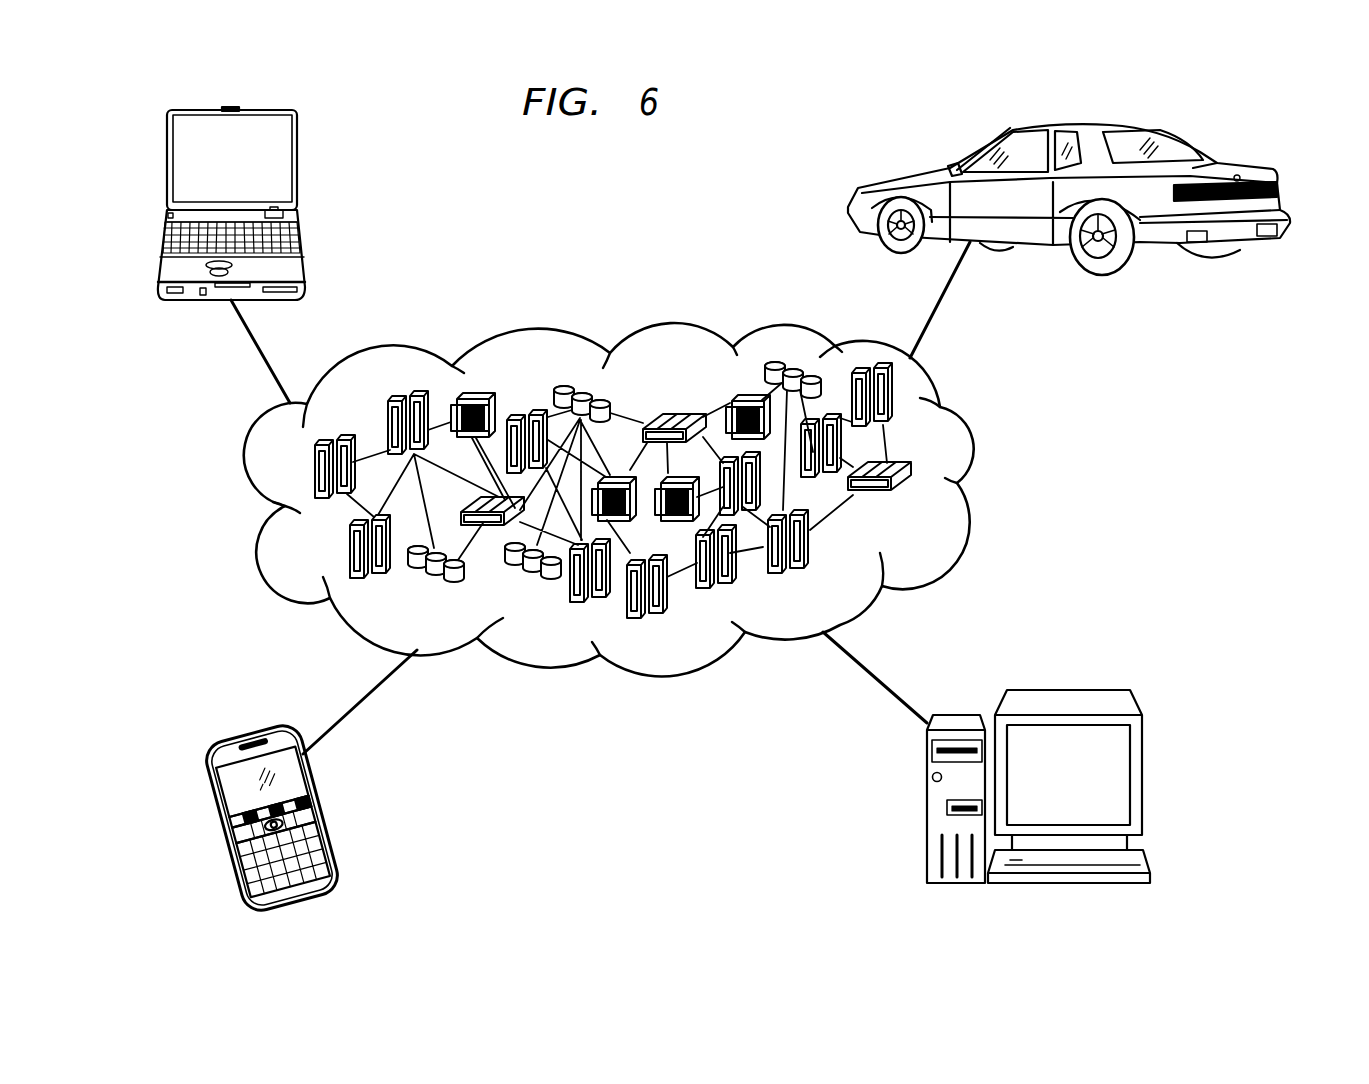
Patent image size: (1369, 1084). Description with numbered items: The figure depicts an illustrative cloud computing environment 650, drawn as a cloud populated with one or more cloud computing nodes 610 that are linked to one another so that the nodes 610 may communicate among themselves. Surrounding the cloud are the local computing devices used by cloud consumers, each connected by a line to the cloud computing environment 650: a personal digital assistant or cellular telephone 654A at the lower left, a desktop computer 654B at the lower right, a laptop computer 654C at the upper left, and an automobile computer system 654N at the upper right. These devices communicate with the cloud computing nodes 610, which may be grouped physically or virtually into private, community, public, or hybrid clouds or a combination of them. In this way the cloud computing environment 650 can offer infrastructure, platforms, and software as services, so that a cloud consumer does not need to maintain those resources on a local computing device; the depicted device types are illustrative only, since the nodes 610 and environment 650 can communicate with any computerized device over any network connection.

The cloud computing nodes 610 is at (917, 502).
The cloud computing environment 650 is at (642, 499).
The personal digital assistant (PDA) or cellular telephone 654A is at (213, 803).
The desktop computer 654B is at (1070, 686).
The laptop computer 654C is at (167, 151).
The automobile computer system 654N is at (1250, 164).